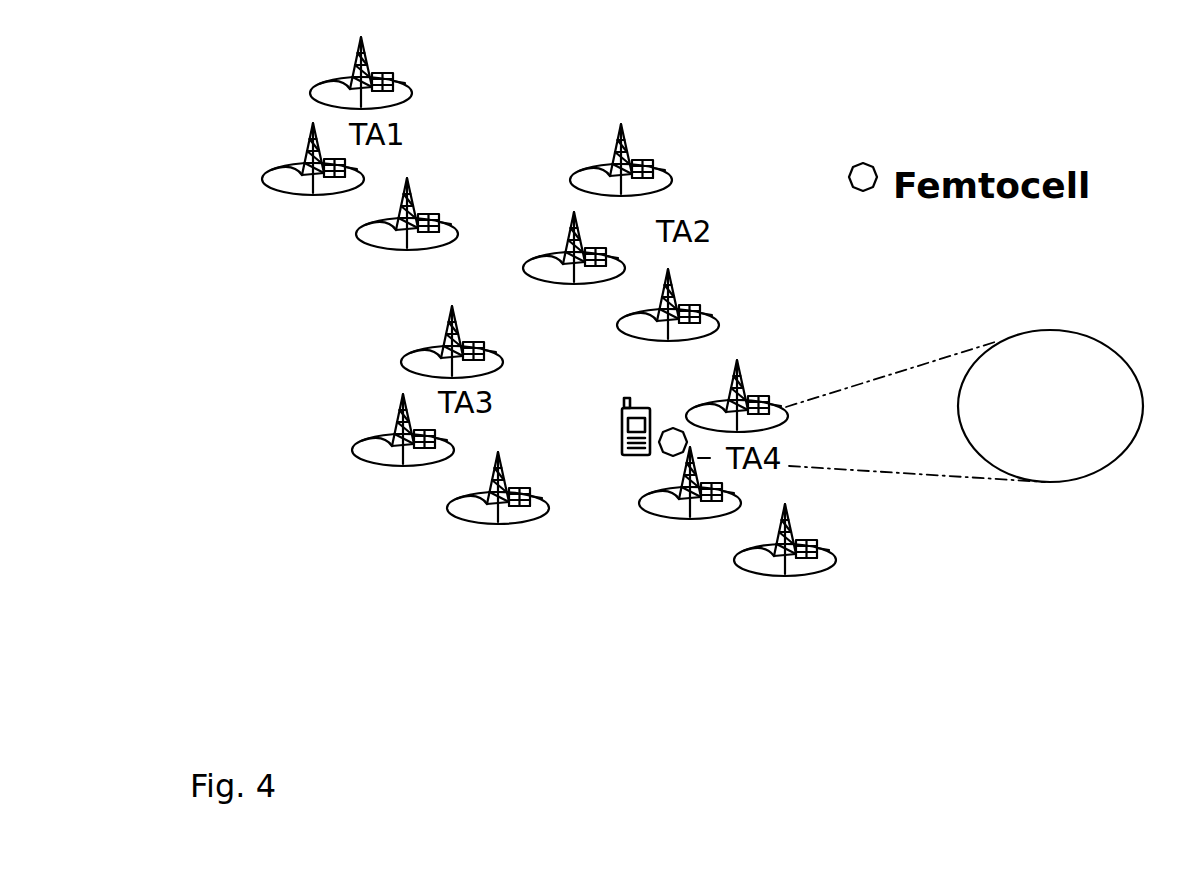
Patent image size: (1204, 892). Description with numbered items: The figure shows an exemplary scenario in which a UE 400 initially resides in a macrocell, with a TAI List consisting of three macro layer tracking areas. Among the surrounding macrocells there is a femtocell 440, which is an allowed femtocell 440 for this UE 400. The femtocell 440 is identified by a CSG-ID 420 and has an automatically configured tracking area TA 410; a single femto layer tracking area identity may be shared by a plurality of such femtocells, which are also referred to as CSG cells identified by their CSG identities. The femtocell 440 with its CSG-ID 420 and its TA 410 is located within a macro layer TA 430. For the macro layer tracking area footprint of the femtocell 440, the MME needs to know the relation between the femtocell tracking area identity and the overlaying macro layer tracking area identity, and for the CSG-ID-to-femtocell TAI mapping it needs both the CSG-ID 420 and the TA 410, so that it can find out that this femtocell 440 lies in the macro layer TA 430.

The UE 400 is at (632, 458).
The TA 10 410 is at (1058, 350).
The CSG-ID 5 420 is at (1100, 440).
The macro layer TA4 430 is at (690, 515).
The femtocell 440 is at (671, 424).